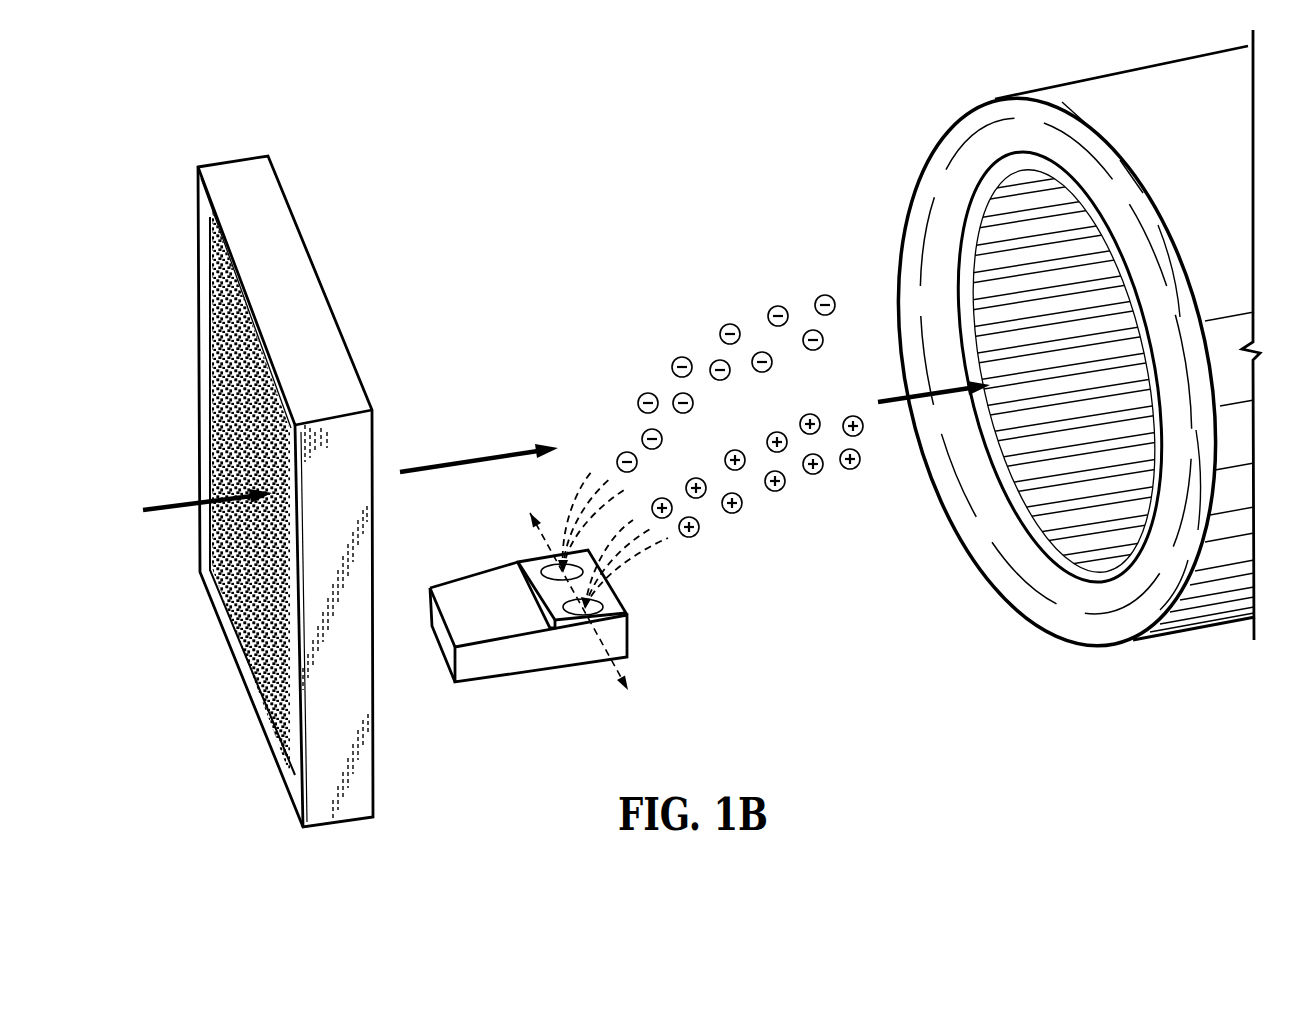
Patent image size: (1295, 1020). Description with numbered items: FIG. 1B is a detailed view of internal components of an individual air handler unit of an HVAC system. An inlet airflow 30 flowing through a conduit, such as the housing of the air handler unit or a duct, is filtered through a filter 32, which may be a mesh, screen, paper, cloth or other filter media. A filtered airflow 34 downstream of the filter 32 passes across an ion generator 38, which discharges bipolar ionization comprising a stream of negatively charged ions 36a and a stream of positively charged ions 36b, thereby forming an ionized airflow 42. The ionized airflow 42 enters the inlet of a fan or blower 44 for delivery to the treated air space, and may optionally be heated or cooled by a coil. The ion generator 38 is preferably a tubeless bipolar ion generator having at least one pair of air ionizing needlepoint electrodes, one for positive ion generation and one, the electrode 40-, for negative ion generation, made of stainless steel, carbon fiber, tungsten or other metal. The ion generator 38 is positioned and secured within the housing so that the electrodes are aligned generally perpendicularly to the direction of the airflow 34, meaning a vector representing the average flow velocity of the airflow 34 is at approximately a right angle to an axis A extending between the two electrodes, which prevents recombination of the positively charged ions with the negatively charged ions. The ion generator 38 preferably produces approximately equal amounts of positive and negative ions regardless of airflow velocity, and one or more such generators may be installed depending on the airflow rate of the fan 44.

The inlet airflow 30 is at (251, 491).
The filter 32 is at (223, 313).
The filtered airflow 34 is at (473, 458).
The negatively charged ions 36a is at (842, 320).
The positively charged ions 36b is at (868, 442).
The ion generator 38 is at (590, 610).
The negative ion generation electrode 40- is at (548, 557).
The axis A is at (593, 643).
The ionized airflow 42 is at (900, 395).
The fan or blower 44 is at (1233, 600).